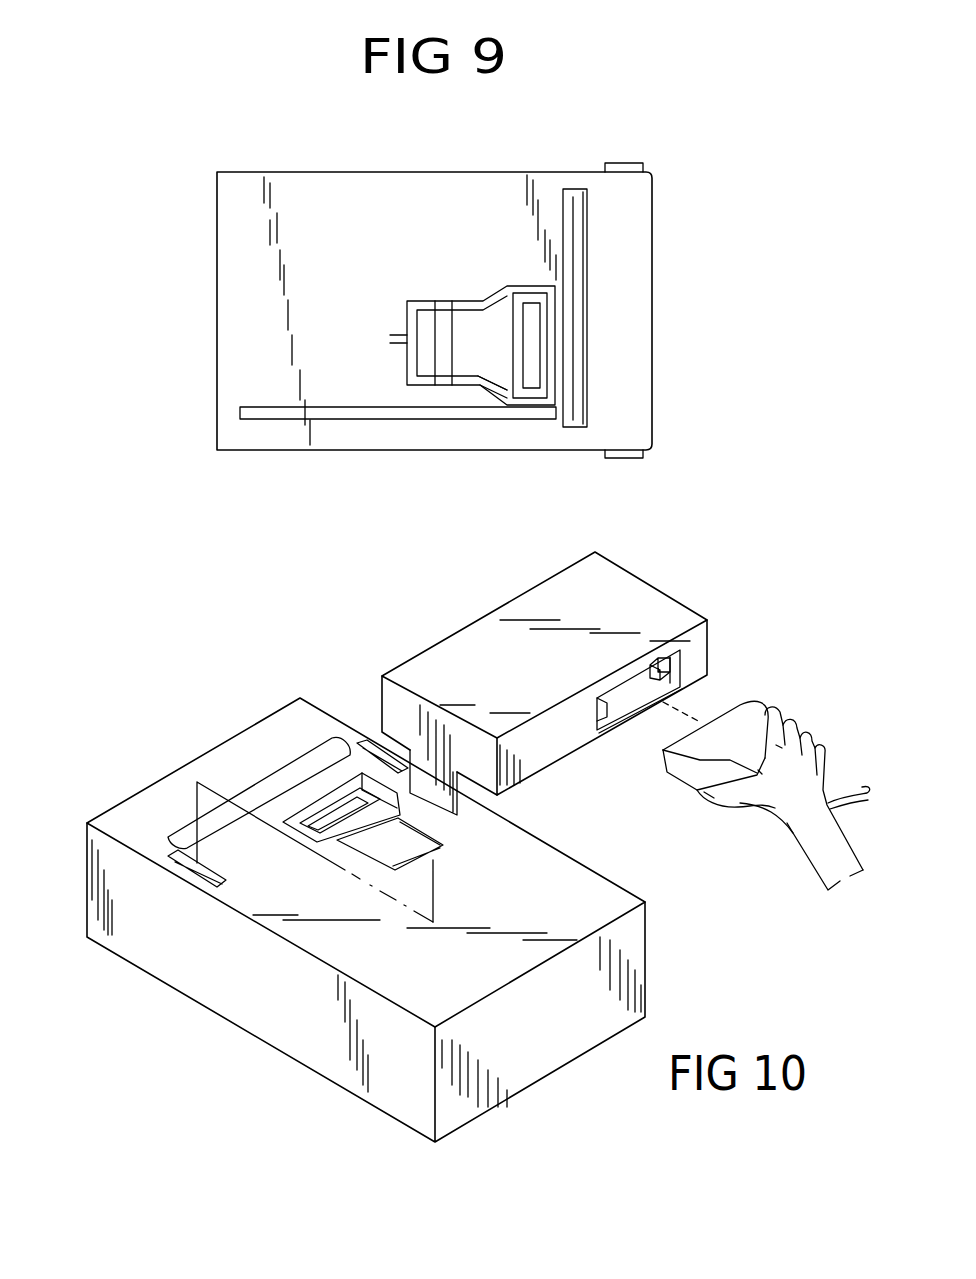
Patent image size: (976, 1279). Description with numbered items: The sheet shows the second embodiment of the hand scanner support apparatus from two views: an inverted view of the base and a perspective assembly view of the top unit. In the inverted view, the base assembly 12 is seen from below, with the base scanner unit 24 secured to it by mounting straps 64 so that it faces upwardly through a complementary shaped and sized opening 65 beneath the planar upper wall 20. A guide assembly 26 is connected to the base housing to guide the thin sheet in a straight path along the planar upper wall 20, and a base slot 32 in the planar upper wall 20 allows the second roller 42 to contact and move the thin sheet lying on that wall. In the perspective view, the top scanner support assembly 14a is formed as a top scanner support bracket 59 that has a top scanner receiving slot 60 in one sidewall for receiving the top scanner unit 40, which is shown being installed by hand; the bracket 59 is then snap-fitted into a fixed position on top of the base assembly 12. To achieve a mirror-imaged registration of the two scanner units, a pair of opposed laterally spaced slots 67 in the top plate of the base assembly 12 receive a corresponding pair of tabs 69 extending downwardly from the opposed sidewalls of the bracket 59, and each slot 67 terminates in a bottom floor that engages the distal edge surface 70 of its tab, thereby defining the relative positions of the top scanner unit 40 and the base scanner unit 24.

In FIG. 10, the base assembly 12 is at (226, 1016).
In FIG. 10, the top scanner support assembly 14a is at (402, 660).
In FIG. 10, the planar upper wall 20 is at (442, 982).
In FIG. 9, the base scanner unit 24 is at (566, 346).
In FIG. 10, the base scanner unit 24 is at (365, 820).
In FIG. 9, the guide assembly 26 is at (335, 402).
In FIG. 9, the base slot 32 is at (583, 363).
In FIG. 10, the top scanner unit 40 is at (748, 700).
In FIG. 9, the second roller 42 is at (570, 232).
In FIG. 10, the top scanner support bracket 59 is at (612, 598).
In FIG. 10, the top scanner receiving slot 60 is at (640, 690).
In FIG. 9, the mounting straps 64 is at (517, 307).
In FIG. 9, the opening 65 is at (465, 380).
In FIG. 10, the slots 67 is at (370, 747).
In FIG. 10, the tabs 69 is at (428, 785).
In FIG. 10, the distal edge surface 70 is at (420, 820).